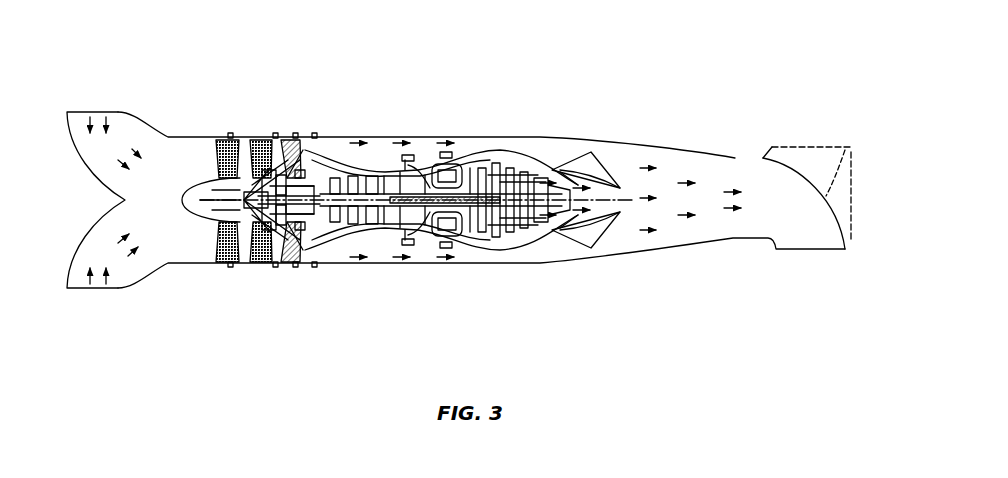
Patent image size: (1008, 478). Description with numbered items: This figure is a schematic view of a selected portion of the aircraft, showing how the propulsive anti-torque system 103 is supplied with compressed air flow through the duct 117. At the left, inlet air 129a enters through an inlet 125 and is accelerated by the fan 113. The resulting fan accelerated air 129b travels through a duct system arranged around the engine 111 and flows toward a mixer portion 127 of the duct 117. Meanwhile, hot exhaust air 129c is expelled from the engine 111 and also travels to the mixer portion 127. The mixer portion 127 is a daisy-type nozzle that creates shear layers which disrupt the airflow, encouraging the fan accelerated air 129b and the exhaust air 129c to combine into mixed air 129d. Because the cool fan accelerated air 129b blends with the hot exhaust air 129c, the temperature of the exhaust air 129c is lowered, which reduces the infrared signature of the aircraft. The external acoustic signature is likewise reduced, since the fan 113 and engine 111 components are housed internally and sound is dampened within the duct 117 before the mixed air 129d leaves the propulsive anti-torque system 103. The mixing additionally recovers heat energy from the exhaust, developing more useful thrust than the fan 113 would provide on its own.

The propulsive anti-torque system 103 is at (807, 264).
The engine 111 is at (425, 228).
The fan 113 is at (272, 264).
The duct 117 is at (735, 158).
The inlet 125 is at (92, 112).
The mixer portion 127 is at (603, 175).
The inlet air 129a is at (141, 157).
The fan accelerated air 129b is at (357, 140).
The exhaust air 129c is at (575, 184).
The mixed air 129d is at (735, 209).